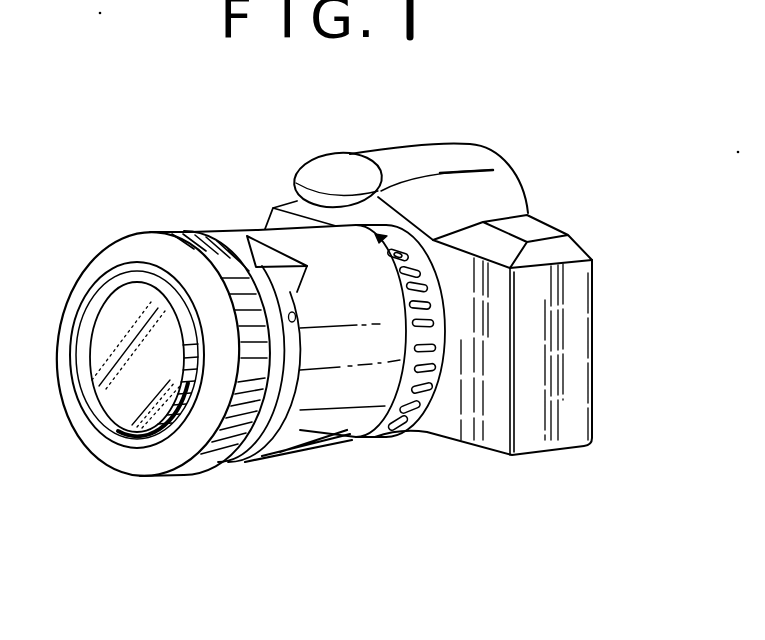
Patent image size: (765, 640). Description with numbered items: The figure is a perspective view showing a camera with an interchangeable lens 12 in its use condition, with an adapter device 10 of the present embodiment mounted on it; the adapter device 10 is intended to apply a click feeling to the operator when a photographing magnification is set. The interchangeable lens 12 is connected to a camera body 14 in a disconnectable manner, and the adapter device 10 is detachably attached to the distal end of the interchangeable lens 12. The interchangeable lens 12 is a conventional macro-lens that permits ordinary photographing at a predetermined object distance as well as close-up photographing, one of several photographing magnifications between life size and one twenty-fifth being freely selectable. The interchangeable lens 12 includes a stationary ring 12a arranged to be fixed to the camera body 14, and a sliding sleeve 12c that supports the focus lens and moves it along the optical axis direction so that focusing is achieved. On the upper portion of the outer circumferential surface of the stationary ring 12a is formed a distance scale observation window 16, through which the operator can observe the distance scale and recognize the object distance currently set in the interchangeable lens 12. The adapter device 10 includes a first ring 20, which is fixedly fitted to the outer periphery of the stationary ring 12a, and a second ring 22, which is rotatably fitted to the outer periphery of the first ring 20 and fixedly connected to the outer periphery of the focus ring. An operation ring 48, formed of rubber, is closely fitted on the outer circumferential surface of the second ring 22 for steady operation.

The adapter device 10 is at (147, 385).
The interchangeable lens 12 is at (345, 370).
The stationary ring 12a is at (310, 434).
The sliding sleeve 12c is at (24, 456).
The camera body 14 is at (572, 352).
The distance scale observation window 16 is at (240, 256).
The first ring 20 is at (184, 363).
The second ring 22 is at (165, 460).
The operation ring 48 is at (167, 230).